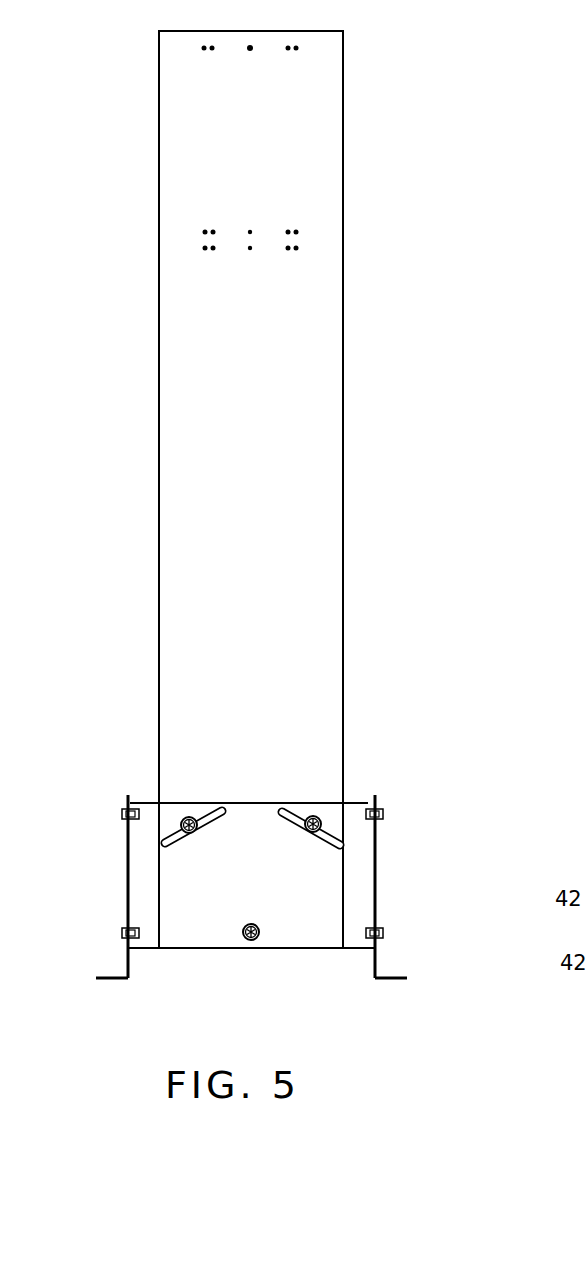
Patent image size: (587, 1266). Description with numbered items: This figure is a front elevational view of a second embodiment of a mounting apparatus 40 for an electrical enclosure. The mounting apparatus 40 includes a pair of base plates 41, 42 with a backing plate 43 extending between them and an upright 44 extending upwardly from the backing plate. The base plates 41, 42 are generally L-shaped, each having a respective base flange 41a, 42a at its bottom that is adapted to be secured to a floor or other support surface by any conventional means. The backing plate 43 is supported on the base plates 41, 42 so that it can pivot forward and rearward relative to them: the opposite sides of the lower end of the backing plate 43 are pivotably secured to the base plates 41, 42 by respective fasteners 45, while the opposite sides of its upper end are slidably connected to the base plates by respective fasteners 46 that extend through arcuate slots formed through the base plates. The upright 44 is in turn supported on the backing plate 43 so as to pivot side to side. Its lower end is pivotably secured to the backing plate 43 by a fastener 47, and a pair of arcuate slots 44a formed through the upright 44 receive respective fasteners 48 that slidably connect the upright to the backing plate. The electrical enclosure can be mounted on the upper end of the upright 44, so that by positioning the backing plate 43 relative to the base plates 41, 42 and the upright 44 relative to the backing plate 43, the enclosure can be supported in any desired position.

The mounting apparatus 40 is at (398, 82).
The base plate 41 is at (127, 881).
The base flange 41a is at (108, 976).
The base plate 42 is at (380, 866).
The base flange 42a is at (392, 976).
The backing plate 43 is at (357, 847).
The upright 44 is at (303, 404).
The arcuate slot 44a is at (221, 812).
The fastener 45 is at (122, 931).
The fastener 46 is at (121, 815).
The fastener 47 is at (262, 936).
The fastener 48 is at (185, 820).